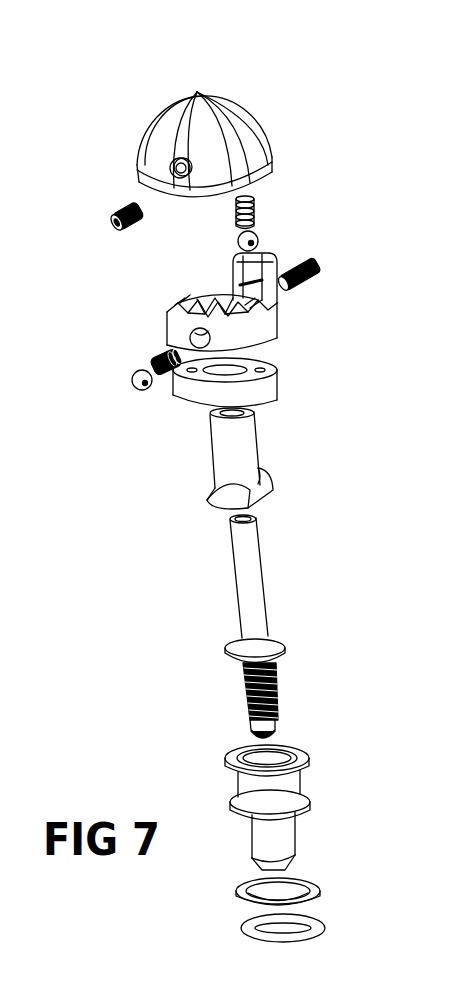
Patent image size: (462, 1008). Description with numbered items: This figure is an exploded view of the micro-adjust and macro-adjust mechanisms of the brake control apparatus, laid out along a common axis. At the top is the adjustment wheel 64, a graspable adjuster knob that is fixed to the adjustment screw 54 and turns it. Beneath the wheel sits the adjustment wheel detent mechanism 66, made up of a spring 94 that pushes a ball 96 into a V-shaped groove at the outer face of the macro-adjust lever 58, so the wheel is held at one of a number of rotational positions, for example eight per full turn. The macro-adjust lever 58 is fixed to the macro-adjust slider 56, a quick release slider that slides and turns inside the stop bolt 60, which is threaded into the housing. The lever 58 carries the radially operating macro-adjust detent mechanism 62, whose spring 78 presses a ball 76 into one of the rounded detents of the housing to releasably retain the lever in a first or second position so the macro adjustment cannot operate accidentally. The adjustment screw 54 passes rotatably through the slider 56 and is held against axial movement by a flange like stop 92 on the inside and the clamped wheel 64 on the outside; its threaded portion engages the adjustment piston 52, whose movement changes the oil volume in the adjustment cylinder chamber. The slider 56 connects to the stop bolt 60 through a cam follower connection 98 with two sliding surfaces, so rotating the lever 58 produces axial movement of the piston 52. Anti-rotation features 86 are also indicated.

The adjustment piston 52 is at (280, 828).
The adjustment screw 54 is at (252, 582).
The macro-adjust slider 56 is at (238, 456).
The macro-adjust lever 58 is at (263, 323).
The stop bolt 60 is at (268, 388).
The macro-adjust detent mechanism 62 is at (131, 388).
The adjustment wheel 64 is at (252, 145).
The adjustment wheel detent mechanism 66 is at (275, 225).
The ball 76 is at (133, 388).
The spring 78 is at (163, 378).
The anti-rotation features 86 is at (300, 747).
The flange like stop 92 is at (225, 648).
The spring 94 is at (235, 208).
The ball 96 is at (238, 242).
The cam follower connection 98 is at (167, 333).